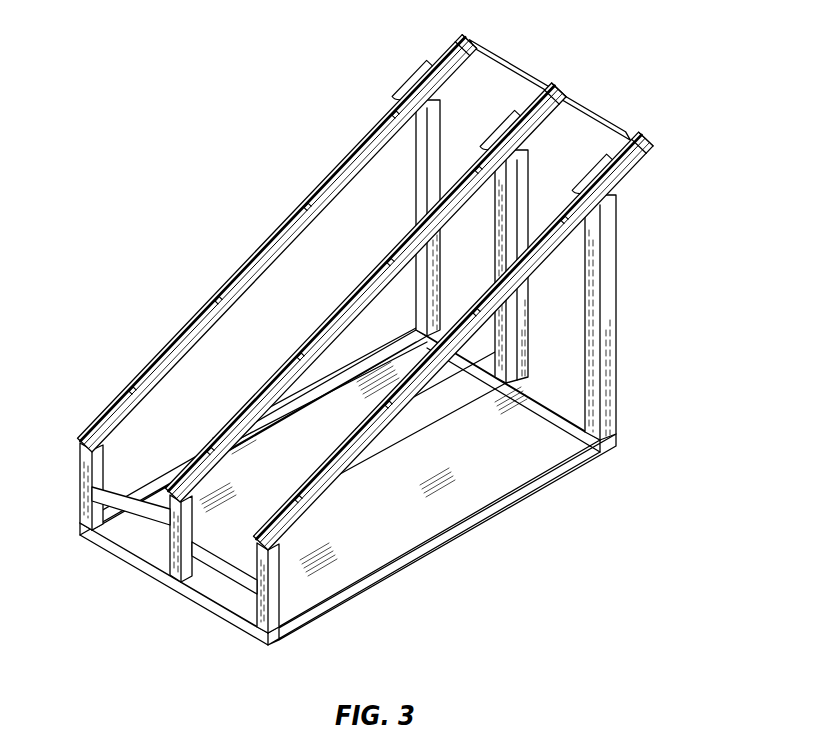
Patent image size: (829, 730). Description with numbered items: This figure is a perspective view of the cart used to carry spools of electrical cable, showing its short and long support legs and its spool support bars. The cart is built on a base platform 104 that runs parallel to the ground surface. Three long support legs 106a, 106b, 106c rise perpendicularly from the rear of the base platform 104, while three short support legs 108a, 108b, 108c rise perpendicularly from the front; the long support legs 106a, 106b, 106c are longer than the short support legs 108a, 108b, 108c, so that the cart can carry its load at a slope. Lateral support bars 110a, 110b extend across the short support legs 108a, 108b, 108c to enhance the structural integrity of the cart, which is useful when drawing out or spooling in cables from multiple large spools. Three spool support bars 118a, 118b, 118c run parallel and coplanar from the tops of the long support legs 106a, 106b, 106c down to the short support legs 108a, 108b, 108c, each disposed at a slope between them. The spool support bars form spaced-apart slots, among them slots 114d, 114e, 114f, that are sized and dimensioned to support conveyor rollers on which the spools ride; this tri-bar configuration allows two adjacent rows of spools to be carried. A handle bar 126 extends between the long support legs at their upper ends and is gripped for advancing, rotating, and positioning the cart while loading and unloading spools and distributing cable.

The base platform 104 is at (409, 517).
The long support leg 106a is at (417, 173).
The long support leg 106b is at (525, 345).
The long support leg 106c is at (612, 368).
The short support leg 108a is at (83, 463).
The short support leg 108b is at (168, 508).
The short support leg 108c is at (275, 610).
The lateral support bar 110a is at (135, 518).
The lateral support bar 110b is at (235, 578).
The slot 114d is at (292, 208).
The slot 114e is at (377, 253).
The slot 114f is at (470, 307).
The spool support bar 118a is at (473, 33).
The spool support bar 118b is at (562, 82).
The spool support bar 118c is at (651, 131).
The handle bar 126 is at (594, 113).